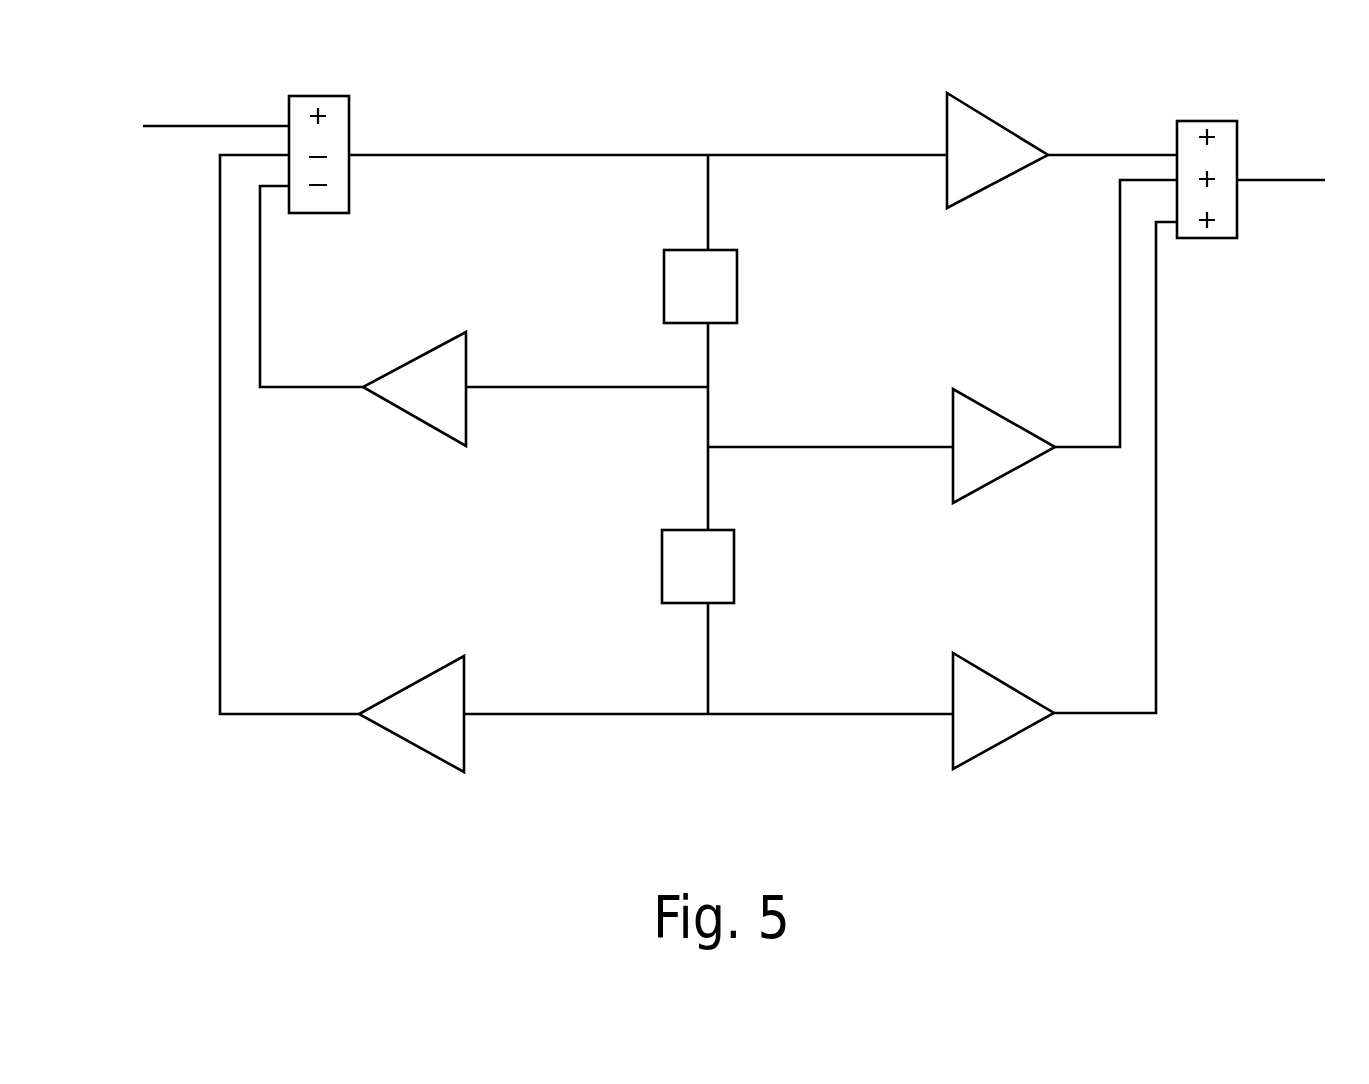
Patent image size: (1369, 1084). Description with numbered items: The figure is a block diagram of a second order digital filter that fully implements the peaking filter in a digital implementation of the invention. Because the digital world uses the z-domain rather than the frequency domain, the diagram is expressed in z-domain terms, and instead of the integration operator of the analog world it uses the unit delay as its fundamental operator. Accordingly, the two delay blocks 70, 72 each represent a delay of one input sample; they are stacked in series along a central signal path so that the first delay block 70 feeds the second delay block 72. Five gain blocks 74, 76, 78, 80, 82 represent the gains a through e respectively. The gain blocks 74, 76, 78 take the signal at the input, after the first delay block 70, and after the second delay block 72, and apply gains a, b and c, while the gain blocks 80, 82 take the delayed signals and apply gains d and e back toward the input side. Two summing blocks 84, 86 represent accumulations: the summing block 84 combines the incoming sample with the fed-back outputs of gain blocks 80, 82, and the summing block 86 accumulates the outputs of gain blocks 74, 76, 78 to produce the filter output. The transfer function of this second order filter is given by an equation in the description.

The delay block 70 is at (737, 291).
The delay block 72 is at (734, 563).
The gain block 74 is at (981, 110).
The gain block 76 is at (985, 404).
The gain block 78 is at (990, 673).
The gain block 80 is at (445, 340).
The gain block 82 is at (438, 668).
The summing block 84 is at (340, 97).
The summing block 86 is at (1237, 140).